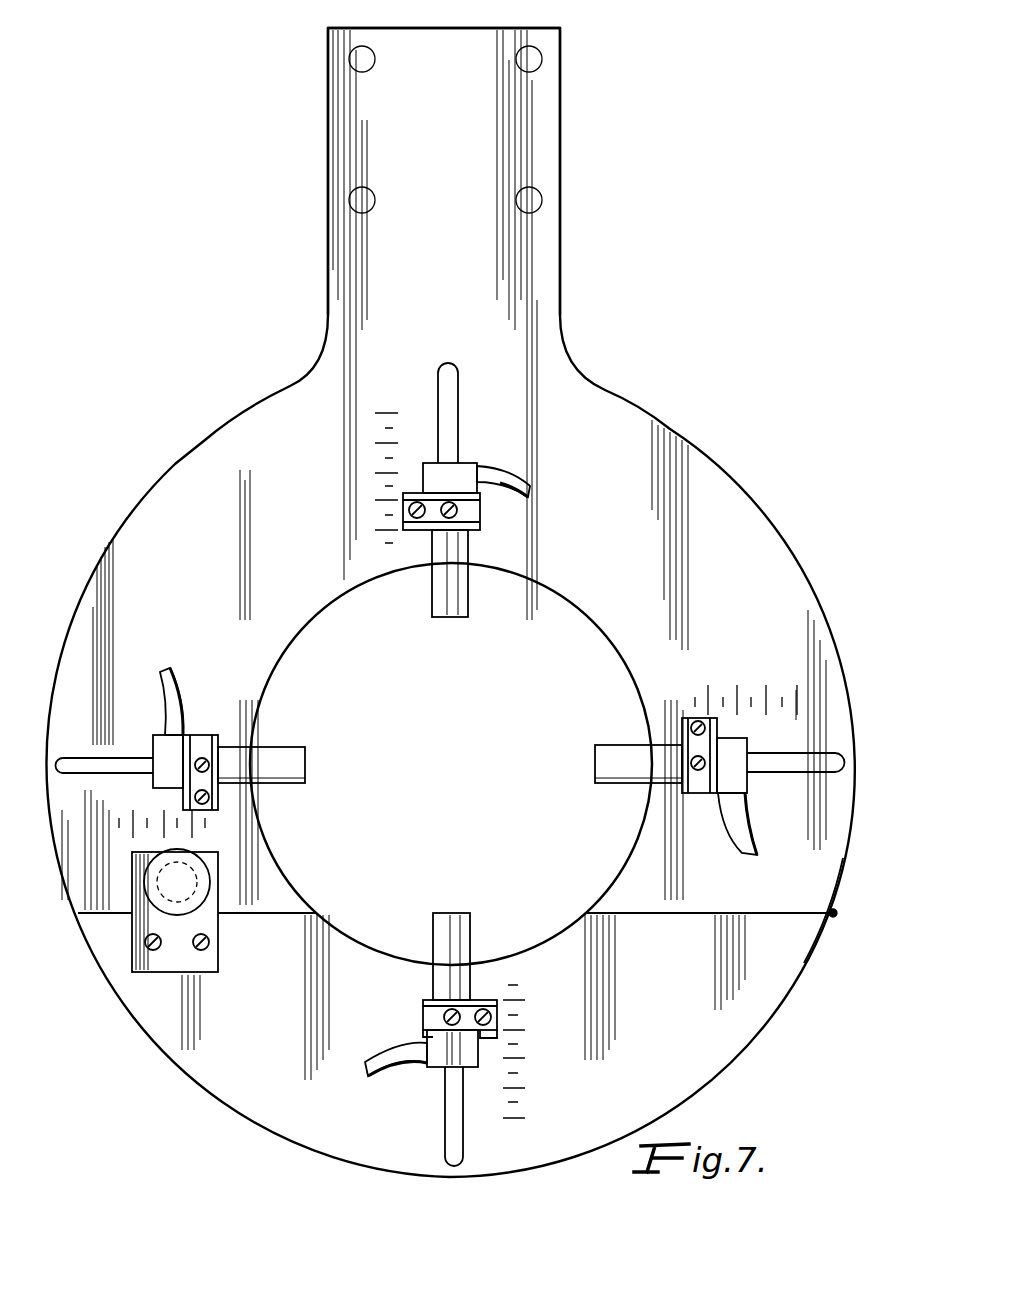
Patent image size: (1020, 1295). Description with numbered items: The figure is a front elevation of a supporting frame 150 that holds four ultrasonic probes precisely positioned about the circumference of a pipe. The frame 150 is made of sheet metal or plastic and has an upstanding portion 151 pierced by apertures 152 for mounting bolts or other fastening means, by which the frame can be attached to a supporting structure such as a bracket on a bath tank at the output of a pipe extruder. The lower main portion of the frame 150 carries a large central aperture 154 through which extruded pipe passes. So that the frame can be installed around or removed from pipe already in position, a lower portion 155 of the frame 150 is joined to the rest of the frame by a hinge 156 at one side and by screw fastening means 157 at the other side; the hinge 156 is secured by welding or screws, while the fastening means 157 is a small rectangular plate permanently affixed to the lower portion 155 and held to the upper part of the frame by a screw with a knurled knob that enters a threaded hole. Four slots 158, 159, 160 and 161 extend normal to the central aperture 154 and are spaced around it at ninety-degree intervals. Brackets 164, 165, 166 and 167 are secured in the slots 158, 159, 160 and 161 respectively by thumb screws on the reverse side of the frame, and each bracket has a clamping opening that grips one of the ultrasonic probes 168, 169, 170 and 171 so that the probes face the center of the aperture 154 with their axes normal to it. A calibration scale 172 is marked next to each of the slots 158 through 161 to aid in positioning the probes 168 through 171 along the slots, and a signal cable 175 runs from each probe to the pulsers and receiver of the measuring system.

The frame 150 is at (662, 348).
The upstanding portion 151 is at (561, 148).
The apertures 152 is at (516, 60).
The central aperture 154 is at (570, 600).
The lower portion 155 is at (250, 1101).
The hinge 156 is at (815, 945).
The screw fastening means 157 is at (185, 895).
The slot 158 is at (458, 390).
The slot 159 is at (835, 755).
The slot 160 is at (447, 1145).
The slot 161 is at (75, 758).
The bracket 164 is at (472, 510).
The bracket 165 is at (700, 717).
The bracket 166 is at (430, 1017).
The bracket 167 is at (205, 737).
The ultrasonic probe 168 is at (496, 490).
The ultrasonic probe 169 is at (748, 750).
The ultrasonic probe 170 is at (466, 1039).
The ultrasonic probe 171 is at (177, 738).
The calibration scale 172 is at (378, 498).
The signal cable 175 is at (522, 480).